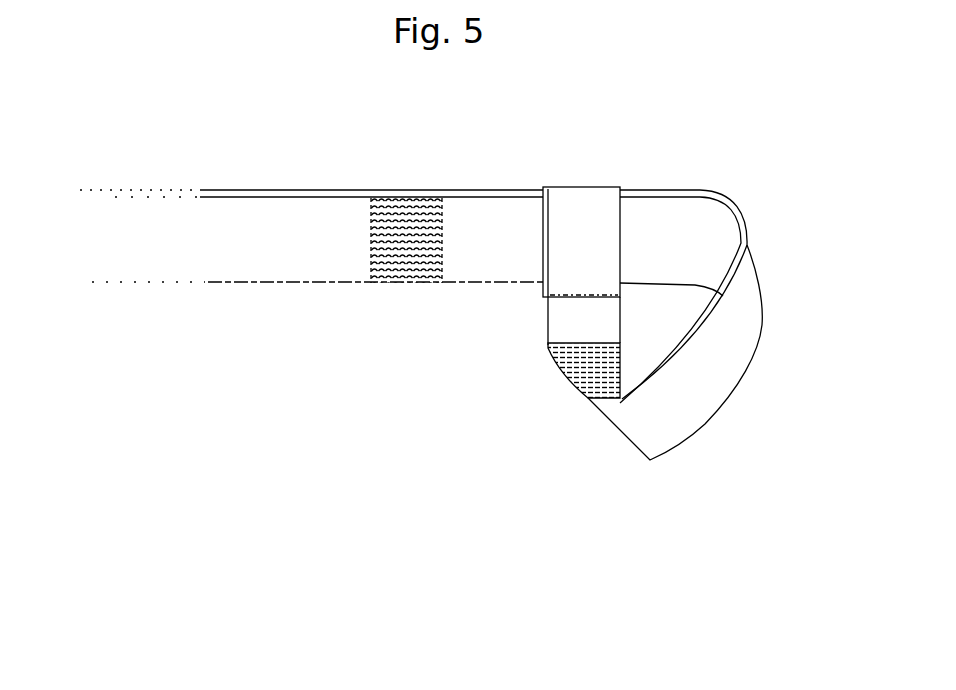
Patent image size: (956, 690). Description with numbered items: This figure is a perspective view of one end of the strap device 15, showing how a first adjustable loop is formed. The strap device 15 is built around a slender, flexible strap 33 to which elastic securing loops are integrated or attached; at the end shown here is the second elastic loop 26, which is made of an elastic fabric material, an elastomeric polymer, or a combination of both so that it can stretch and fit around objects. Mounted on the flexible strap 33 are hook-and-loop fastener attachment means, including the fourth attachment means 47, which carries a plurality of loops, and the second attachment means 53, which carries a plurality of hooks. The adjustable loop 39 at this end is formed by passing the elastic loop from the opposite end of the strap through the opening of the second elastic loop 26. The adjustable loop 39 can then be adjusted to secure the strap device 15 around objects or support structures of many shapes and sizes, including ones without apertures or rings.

The strap device 15 is at (340, 164).
The flexible strap 33 is at (282, 255).
The fourth attachment means 47 is at (428, 196).
The second elastic loop 26 is at (597, 218).
The second attachment means 53 is at (548, 352).
The adjustable loop 39 is at (752, 318).